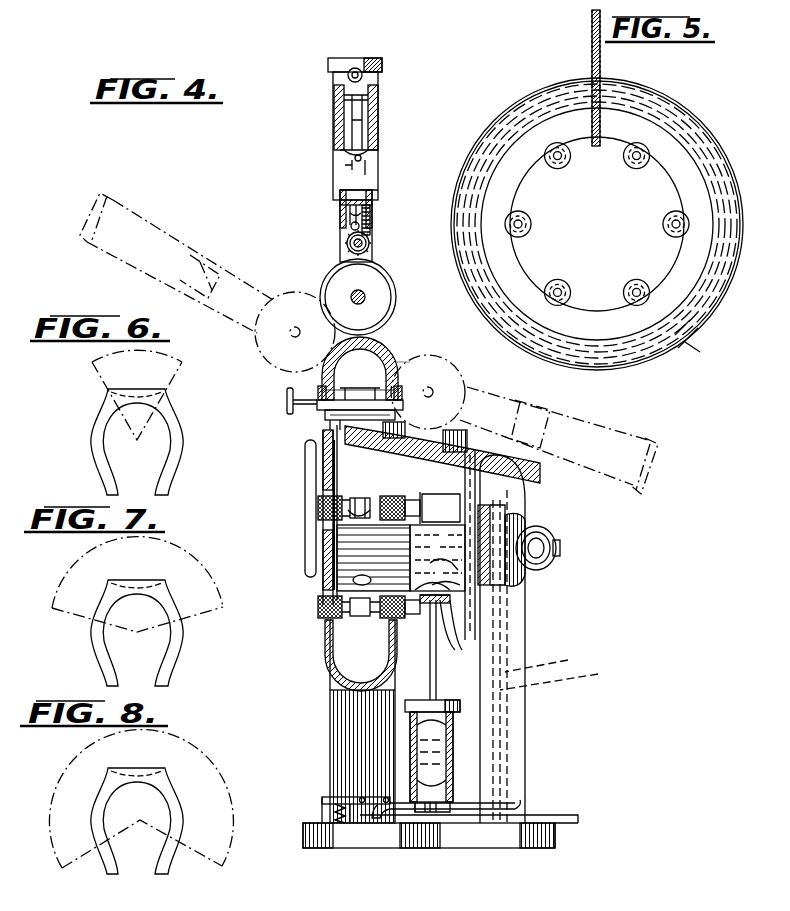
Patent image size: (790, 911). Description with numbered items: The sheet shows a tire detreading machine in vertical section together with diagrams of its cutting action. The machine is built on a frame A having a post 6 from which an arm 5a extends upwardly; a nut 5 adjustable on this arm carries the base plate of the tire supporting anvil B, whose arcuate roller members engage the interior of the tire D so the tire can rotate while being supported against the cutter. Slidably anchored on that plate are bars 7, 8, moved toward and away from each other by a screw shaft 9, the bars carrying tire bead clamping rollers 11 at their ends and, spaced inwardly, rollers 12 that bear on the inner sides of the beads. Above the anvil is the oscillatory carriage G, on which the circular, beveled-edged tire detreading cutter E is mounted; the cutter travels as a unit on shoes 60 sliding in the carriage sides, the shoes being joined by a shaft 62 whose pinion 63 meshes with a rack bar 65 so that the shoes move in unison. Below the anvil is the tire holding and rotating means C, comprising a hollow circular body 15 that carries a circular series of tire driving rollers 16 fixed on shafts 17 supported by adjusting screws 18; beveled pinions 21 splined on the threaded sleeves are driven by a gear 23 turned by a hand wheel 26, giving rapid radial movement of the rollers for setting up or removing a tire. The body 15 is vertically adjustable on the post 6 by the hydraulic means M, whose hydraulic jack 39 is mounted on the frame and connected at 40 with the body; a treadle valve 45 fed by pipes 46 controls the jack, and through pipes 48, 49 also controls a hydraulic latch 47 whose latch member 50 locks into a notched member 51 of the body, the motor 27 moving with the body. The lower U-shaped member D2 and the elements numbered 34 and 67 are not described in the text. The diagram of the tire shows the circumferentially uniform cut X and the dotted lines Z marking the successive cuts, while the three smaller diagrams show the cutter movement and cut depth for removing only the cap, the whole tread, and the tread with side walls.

In FIG. 4, the upper guide column 67 is at (380, 104).
In FIG. 4, the oscillatory carriage G is at (332, 186).
In FIG. 4, the rack bar 65 is at (371, 216).
In FIG. 4, the shoes 60 is at (351, 233).
In FIG. 4, the pinion 63 is at (370, 242).
In FIG. 4, the shaft 62 is at (363, 246).
In FIG. 4, the tire detreading cutter E is at (405, 287).
In FIG. 5, the tire detreading cutter E is at (610, 78).
In FIG. 4, the tire D is at (390, 340).
In FIG. 5, the tire D is at (685, 118).
In FIG. 4, the tire supporting anvil B is at (402, 362).
In FIG. 4, the rollers 12 is at (360, 385).
In FIG. 4, the tire bead clamping rollers 11 is at (402, 392).
In FIG. 4, the bar 7 is at (403, 405).
In FIG. 4, the nut 5 is at (420, 428).
In FIG. 4, the arm 5a is at (458, 440).
In FIG. 4, the screw shaft 9 is at (295, 412).
In FIG. 4, the bar 8 is at (325, 412).
In FIG. 4, the beveled pinions 21 is at (323, 462).
In FIG. 4, the gear 23 is at (330, 481).
In FIG. 4, the hand wheel 26 is at (305, 505).
In FIG. 4, the tire driving rollers 16 is at (340, 500).
In FIG. 5, the tire driving rollers 16 is at (666, 215).
In FIG. 4, the adjusting screws 18 is at (372, 485).
In FIG. 4, the shafts 17 is at (394, 485).
In FIG. 4, the hollow circular body 15 is at (337, 535).
In FIG. 4, the tire holding and rotating means C is at (311, 612).
In FIG. 4, the piston rod 34 is at (445, 600).
In FIG. 4, the connection 40 is at (454, 632).
In FIG. 4, the lower U member D2 is at (318, 666).
In FIG. 4, the notched member 51 is at (476, 495).
In FIG. 4, the latch member 50 is at (505, 525).
In FIG. 4, the hydraulic latch 47 is at (525, 528).
In FIG. 4, the motor 27 is at (557, 570).
In FIG. 4, the post 6 is at (525, 618).
In FIG. 4, the frame A is at (332, 718).
In FIG. 4, the pipe 48 is at (549, 660).
In FIG. 4, the pipe 49 is at (561, 676).
In FIG. 4, the hydraulic means M is at (469, 718).
In FIG. 4, the hydraulic jack 39 is at (450, 760).
In FIG. 4, the treadle valve 45 is at (325, 797).
In FIG. 4, the pipes 46 is at (370, 820).
In FIG. 5, the uniform cut X is at (692, 155).
In FIG. 5, the dotted lines Z is at (694, 338).